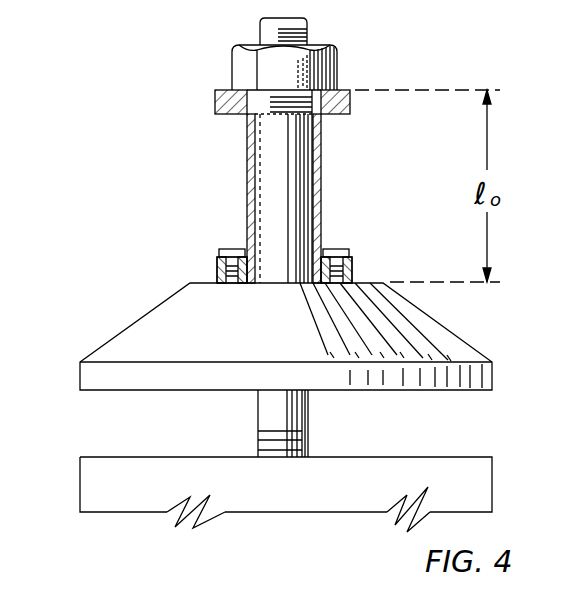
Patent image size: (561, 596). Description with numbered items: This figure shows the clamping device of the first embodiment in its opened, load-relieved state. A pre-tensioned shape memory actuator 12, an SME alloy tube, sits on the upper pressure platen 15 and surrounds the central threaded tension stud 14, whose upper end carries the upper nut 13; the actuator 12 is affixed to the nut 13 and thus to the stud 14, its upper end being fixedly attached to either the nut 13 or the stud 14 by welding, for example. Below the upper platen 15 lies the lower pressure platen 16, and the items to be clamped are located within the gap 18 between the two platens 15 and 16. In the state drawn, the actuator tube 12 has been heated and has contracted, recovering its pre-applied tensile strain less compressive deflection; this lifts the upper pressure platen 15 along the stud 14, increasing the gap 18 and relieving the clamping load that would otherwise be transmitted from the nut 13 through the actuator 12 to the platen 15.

The shape memory actuator 12 is at (248, 179).
The upper nut 13 is at (245, 66).
The central threaded tension stud 14 is at (312, 31).
The upper pressure platen 15 is at (158, 324).
The lower pressure platen 16 is at (108, 485).
The gap 18 is at (163, 422).